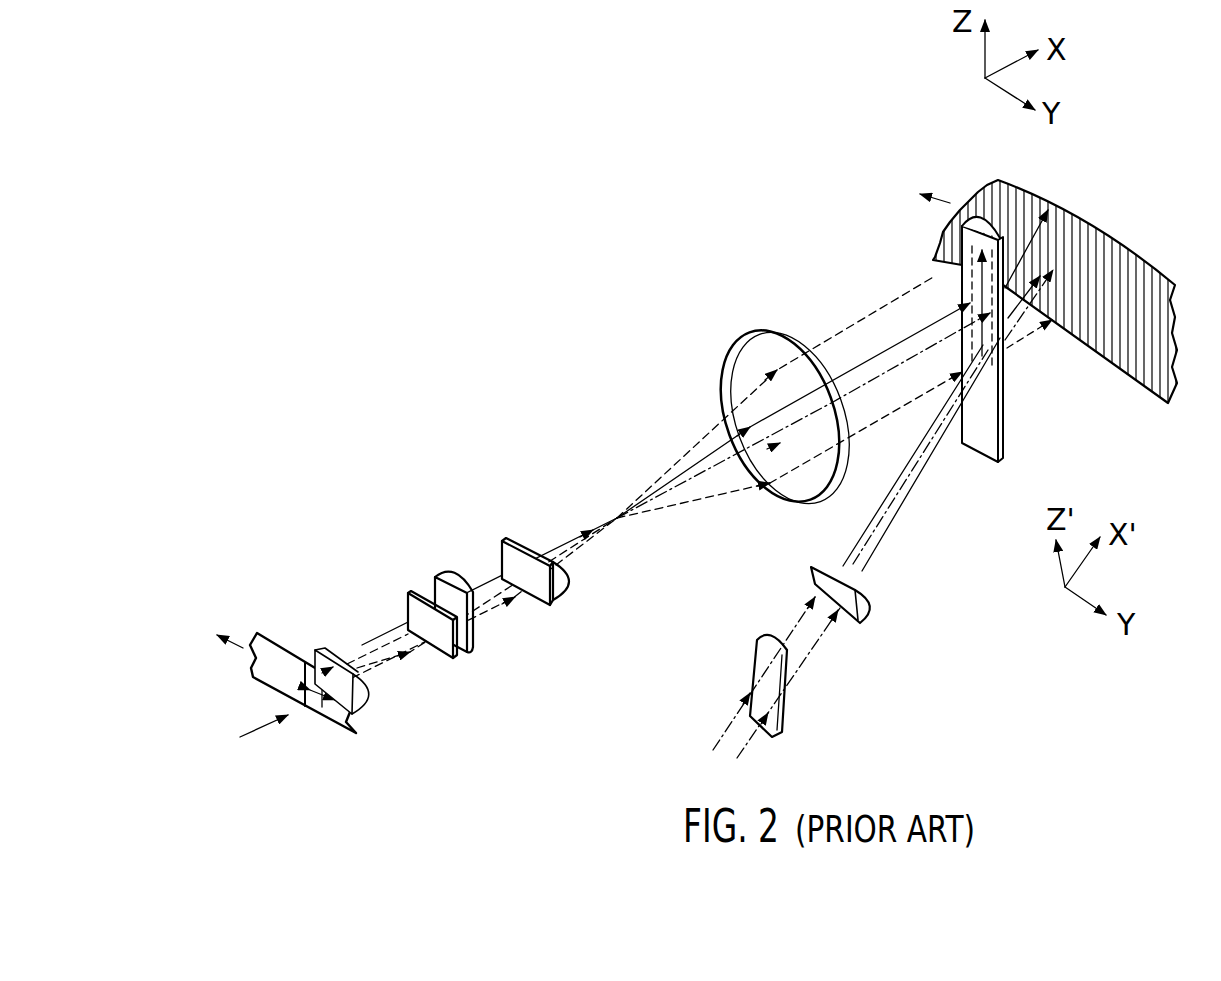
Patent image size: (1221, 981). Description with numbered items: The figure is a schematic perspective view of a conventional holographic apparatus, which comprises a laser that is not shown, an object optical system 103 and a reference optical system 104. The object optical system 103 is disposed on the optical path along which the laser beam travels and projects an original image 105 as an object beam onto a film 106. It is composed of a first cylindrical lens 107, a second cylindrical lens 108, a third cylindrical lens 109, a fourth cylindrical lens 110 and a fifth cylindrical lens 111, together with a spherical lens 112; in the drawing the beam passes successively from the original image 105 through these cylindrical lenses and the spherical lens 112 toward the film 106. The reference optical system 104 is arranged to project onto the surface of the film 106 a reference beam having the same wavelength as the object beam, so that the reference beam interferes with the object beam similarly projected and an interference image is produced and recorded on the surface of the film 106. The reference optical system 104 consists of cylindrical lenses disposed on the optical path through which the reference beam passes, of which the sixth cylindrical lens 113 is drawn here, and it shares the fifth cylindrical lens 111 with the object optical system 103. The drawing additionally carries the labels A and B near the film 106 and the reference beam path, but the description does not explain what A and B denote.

The object optical system 103 is at (560, 455).
The reference optical system 104 is at (912, 585).
The original image 105 is at (283, 655).
The film 106 is at (1080, 212).
The first cylindrical lens 107 is at (367, 690).
The second cylindrical lens 108 is at (402, 610).
The third cylindrical lens 109 is at (448, 577).
The fourth cylindrical lens 110 is at (568, 583).
The fifth cylindrical lens 111 is at (968, 241).
The spherical lens 112 is at (756, 348).
The sixth cylindrical lens 113 is at (812, 580).
The slit plate A is at (975, 396).
The light beam B is at (893, 523).